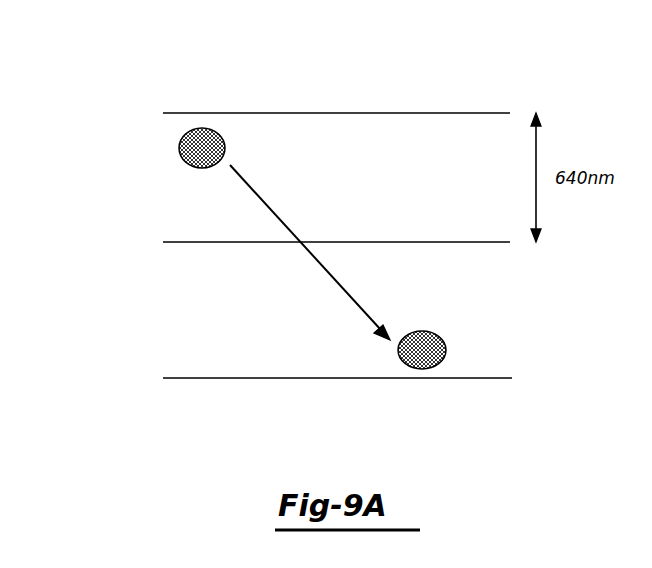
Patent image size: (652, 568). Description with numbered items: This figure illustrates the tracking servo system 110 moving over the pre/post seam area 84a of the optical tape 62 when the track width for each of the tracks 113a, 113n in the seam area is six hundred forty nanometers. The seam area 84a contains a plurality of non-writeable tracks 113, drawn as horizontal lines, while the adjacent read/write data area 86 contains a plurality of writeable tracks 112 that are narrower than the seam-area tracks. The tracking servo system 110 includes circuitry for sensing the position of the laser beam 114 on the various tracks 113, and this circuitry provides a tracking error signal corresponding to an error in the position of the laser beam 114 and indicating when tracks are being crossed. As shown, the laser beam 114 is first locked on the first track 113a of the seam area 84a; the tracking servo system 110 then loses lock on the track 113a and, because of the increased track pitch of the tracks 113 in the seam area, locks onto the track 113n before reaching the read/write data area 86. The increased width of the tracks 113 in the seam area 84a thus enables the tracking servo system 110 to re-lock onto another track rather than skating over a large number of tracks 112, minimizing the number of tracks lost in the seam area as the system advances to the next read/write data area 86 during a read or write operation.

The optical tape 62 is at (417, 84).
The tracking servo system 110 is at (313, 91).
The plurality of non-writeable tracks 113 is at (152, 213).
The first track of seam area 113a is at (474, 130).
The last track of seam area 113n is at (475, 350).
The laser beam 114 is at (202, 135).
The read/write data area 86 is at (561, 281).
The plurality of writeable tracks 112 is at (561, 331).
The seam area 84a is at (305, 378).